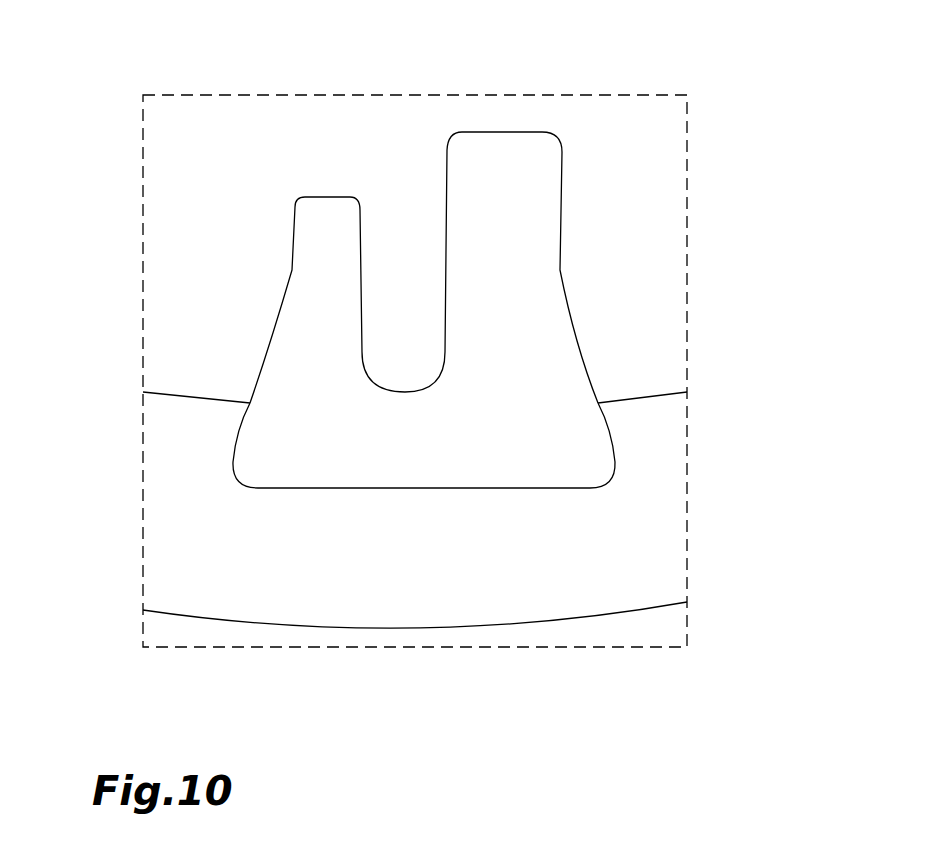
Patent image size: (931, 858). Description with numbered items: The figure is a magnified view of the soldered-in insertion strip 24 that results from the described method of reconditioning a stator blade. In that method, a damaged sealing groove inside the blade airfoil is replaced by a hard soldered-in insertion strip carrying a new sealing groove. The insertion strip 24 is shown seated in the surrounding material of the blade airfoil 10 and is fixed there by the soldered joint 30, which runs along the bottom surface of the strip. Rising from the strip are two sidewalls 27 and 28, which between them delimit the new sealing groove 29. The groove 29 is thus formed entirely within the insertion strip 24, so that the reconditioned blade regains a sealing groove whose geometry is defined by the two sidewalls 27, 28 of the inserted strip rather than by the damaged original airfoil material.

The tissue / body substrate 10 is at (672, 553).
The insertion strip 24 is at (463, 460).
The sidewall 27 is at (312, 255).
The sidewall 28 is at (505, 260).
The sealing groove 29 is at (403, 98).
The soldered joint 30 is at (374, 482).